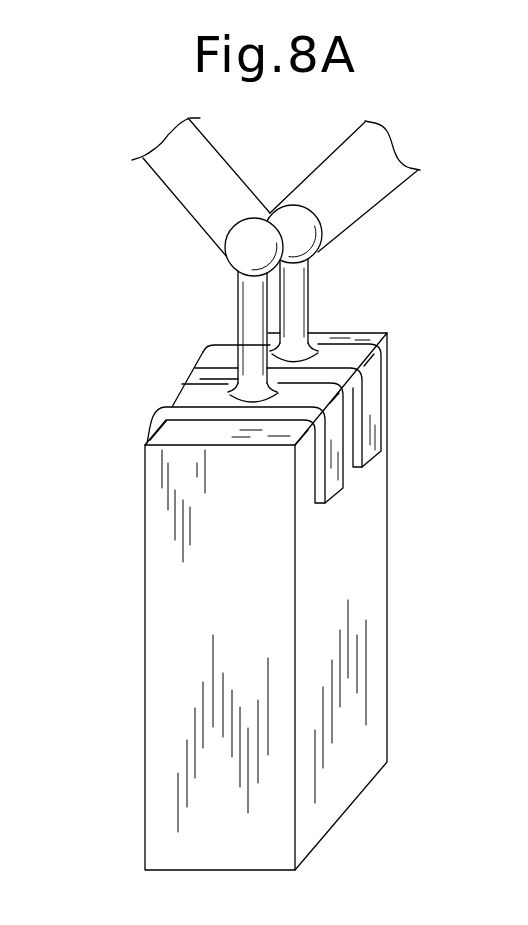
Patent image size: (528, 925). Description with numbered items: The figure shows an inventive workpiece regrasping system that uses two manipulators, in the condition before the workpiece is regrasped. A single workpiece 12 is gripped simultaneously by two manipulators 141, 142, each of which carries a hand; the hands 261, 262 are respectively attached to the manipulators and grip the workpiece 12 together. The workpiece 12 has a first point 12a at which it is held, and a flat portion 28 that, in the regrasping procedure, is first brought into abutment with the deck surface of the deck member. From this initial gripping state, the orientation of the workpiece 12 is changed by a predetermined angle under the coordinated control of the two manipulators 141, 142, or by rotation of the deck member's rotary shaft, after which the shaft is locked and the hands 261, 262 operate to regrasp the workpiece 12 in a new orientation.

The workpiece 12 is at (150, 716).
The first point 12a is at (388, 345).
The flat portion 28 is at (377, 664).
The manipulator 141 is at (192, 200).
The manipulator 142 is at (360, 195).
The hand 261 is at (185, 397).
The hand 262 is at (373, 399).